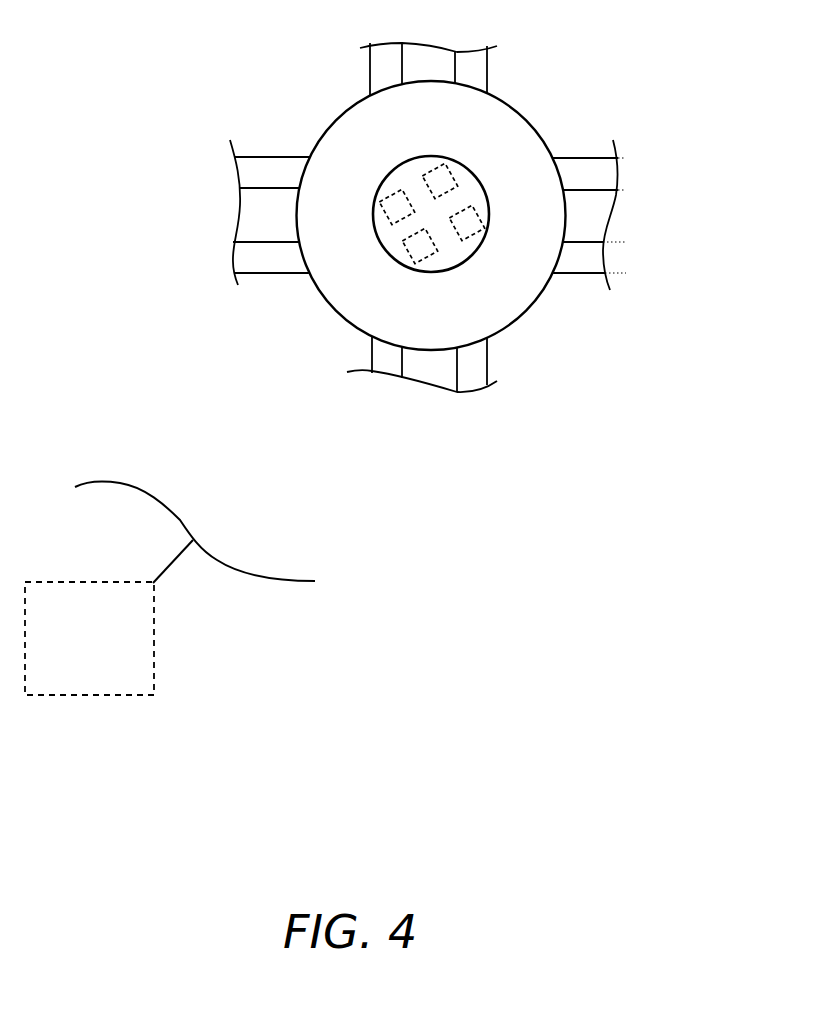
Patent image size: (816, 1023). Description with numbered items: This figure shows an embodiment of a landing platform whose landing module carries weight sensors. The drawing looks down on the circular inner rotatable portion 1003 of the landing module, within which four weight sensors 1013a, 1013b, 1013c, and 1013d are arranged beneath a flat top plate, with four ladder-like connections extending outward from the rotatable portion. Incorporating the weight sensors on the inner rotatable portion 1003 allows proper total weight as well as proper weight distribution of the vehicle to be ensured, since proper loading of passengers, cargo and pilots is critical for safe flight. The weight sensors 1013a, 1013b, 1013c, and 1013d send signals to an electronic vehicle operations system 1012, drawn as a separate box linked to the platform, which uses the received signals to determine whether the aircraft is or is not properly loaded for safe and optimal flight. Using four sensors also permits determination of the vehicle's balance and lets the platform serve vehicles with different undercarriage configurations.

The inner rotatable portion 1003 is at (452, 270).
The electronic vehicle operations system 1012 is at (123, 641).
The weight sensor 1013a is at (390, 193).
The weight sensor 1013b is at (467, 167).
The weight sensor 1013c is at (410, 257).
The weight sensor 1013d is at (473, 243).